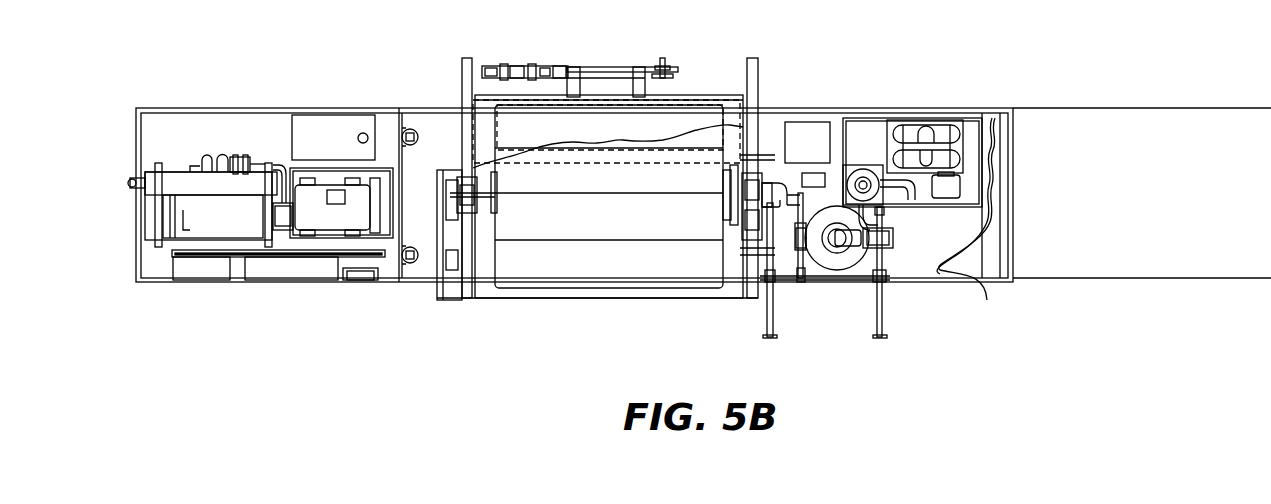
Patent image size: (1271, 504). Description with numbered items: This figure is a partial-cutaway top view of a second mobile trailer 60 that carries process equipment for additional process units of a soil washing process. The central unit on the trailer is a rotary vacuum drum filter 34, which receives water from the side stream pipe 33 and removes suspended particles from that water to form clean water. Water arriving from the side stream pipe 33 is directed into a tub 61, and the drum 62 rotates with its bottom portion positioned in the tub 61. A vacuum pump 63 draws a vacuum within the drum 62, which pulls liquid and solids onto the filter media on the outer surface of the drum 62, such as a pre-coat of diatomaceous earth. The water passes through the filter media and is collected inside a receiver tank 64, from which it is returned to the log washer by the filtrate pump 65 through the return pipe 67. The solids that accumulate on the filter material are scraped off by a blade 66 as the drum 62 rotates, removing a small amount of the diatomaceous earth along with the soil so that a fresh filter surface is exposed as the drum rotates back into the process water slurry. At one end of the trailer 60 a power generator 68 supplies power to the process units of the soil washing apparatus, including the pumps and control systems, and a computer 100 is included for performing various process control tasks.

The second mobile trailer 60 is at (1013, 82).
The power generator 68 is at (137, 180).
The computer 100 is at (363, 283).
The tub 61 is at (483, 285).
The drum 62 is at (548, 272).
The rotary vacuum drum filter 34 is at (710, 117).
The blade 66 is at (607, 73).
The vacuum pump 63 is at (942, 118).
The receiver tank 64 is at (853, 272).
The side stream pipe 33 is at (763, 323).
The return pipe 67 is at (883, 320).
The filtrate pump 65 is at (987, 300).